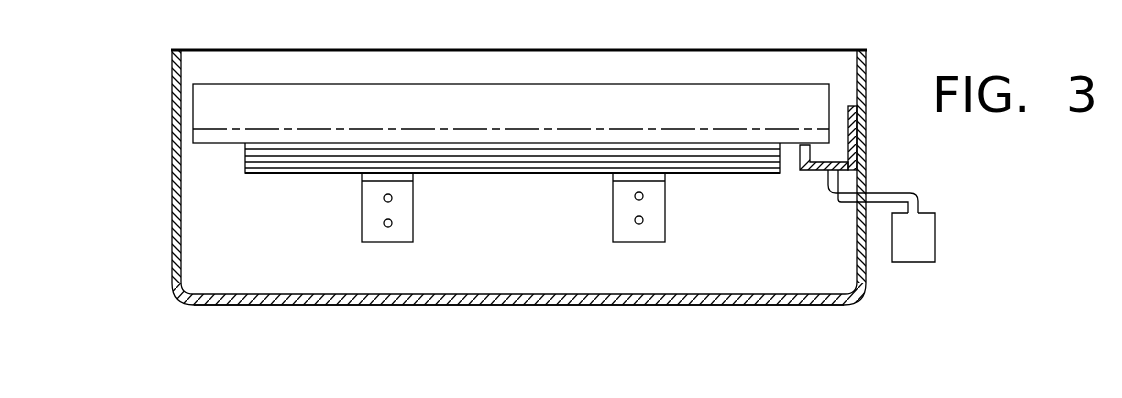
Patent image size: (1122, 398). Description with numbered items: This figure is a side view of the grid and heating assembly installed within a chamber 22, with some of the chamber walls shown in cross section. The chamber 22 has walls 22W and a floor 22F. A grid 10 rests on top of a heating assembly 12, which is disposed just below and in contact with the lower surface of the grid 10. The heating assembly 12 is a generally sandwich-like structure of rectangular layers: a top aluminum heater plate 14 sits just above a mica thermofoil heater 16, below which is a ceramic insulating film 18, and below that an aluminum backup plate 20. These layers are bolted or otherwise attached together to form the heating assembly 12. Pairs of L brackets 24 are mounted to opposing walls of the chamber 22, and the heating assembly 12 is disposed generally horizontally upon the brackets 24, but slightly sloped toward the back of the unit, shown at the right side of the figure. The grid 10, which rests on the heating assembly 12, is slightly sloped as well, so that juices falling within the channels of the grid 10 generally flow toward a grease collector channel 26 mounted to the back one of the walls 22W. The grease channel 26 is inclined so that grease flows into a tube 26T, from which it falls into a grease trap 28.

The grid 10 is at (352, 84).
The heating assembly 12 is at (245, 160).
The aluminum heater plate 14 is at (283, 153).
The mica thermofoil heater 16 is at (302, 162).
The ceramic insulating film 18 is at (320, 169).
The aluminum backup plate 20 is at (342, 180).
The chamber 22 is at (370, 258).
The walls 22W is at (857, 68).
The floor 22F is at (375, 305).
The L brackets 24 is at (413, 228).
The grease collector channel 26 is at (802, 177).
The tube 26T is at (843, 202).
The grease trap 28 is at (910, 236).